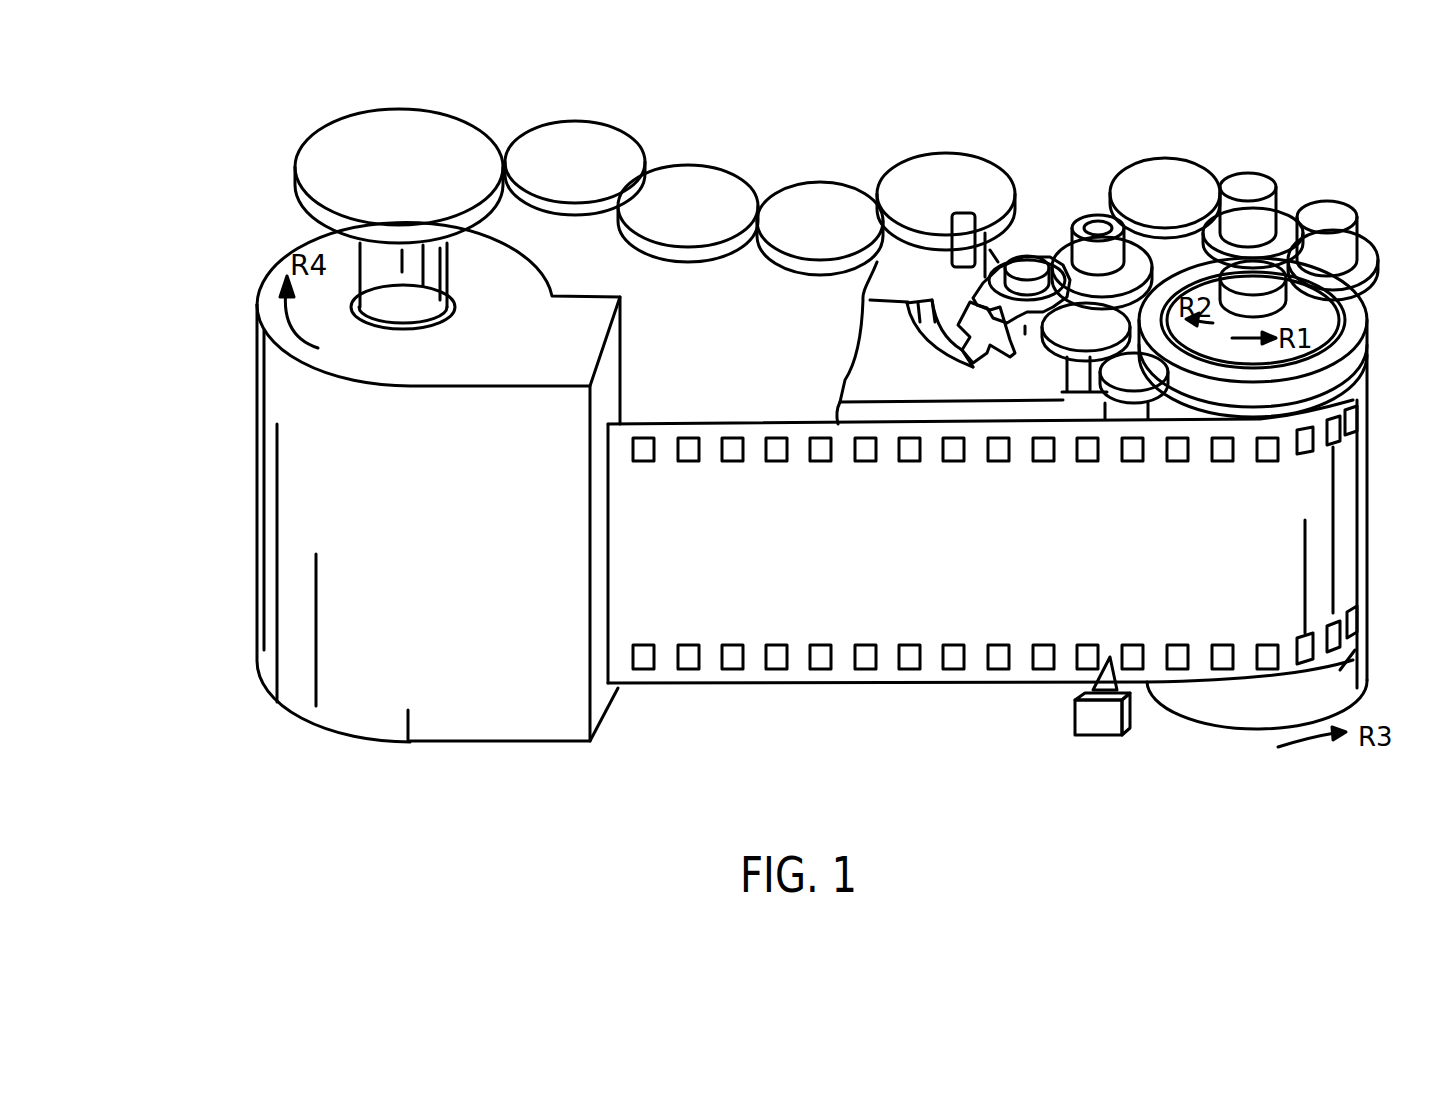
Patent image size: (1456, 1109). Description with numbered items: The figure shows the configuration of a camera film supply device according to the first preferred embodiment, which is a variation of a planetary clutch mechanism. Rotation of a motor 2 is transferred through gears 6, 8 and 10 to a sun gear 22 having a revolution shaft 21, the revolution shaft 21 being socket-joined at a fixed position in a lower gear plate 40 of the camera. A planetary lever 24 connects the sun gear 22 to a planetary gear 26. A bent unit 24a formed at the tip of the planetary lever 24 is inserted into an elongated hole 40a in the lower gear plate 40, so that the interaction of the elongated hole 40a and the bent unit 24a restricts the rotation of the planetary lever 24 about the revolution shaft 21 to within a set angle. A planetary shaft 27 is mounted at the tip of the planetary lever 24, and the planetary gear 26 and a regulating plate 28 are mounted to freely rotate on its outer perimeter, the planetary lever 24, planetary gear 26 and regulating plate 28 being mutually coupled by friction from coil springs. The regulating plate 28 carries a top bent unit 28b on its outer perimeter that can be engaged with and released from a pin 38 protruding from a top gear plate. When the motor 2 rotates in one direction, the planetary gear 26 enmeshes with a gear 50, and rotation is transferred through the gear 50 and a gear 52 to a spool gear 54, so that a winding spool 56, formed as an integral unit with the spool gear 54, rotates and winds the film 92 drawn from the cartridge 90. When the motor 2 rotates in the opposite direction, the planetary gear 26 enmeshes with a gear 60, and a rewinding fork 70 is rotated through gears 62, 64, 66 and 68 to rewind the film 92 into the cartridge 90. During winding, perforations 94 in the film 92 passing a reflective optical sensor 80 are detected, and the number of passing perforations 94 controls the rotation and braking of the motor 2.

The motor 2 is at (1322, 308).
The gear 6 is at (1377, 243).
The gear 8 is at (1287, 202).
The gear 10 is at (1205, 163).
The revolution shaft 21 is at (1100, 227).
The sun gear 22 is at (1063, 237).
The planetary lever 24 is at (1023, 330).
The bent unit 24a is at (965, 367).
The planetary gear 26 is at (1030, 333).
The planetary shaft 27 is at (1027, 267).
The regulating plate 28 is at (870, 300).
The top bent unit 28b is at (990, 255).
The pin 38 is at (963, 215).
The lower gear plate 40 is at (855, 385).
The elongated hole 40a is at (913, 348).
The gear 50 is at (1083, 345).
The gear 52 is at (1150, 380).
The spool gear 54 is at (1327, 378).
The winding spool 56 is at (1347, 667).
The gear 60 is at (897, 167).
The gear 62 is at (820, 182).
The gear 64 is at (715, 167).
The gear 66 is at (583, 125).
The gear 68 is at (445, 105).
The rewinding fork 70 is at (412, 305).
The reflective optical sensor 80 is at (1090, 720).
The cartridge 90 is at (268, 630).
The film 92 is at (798, 670).
The perforations 94 is at (735, 670).